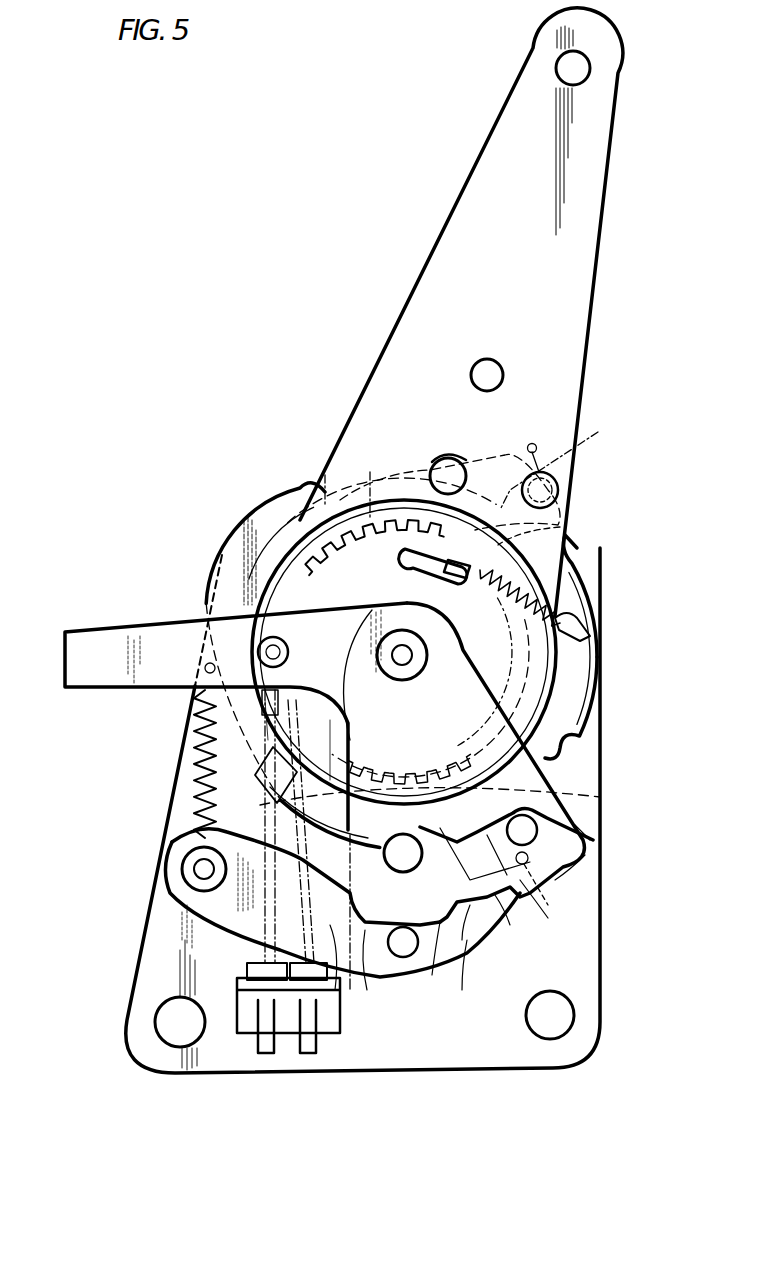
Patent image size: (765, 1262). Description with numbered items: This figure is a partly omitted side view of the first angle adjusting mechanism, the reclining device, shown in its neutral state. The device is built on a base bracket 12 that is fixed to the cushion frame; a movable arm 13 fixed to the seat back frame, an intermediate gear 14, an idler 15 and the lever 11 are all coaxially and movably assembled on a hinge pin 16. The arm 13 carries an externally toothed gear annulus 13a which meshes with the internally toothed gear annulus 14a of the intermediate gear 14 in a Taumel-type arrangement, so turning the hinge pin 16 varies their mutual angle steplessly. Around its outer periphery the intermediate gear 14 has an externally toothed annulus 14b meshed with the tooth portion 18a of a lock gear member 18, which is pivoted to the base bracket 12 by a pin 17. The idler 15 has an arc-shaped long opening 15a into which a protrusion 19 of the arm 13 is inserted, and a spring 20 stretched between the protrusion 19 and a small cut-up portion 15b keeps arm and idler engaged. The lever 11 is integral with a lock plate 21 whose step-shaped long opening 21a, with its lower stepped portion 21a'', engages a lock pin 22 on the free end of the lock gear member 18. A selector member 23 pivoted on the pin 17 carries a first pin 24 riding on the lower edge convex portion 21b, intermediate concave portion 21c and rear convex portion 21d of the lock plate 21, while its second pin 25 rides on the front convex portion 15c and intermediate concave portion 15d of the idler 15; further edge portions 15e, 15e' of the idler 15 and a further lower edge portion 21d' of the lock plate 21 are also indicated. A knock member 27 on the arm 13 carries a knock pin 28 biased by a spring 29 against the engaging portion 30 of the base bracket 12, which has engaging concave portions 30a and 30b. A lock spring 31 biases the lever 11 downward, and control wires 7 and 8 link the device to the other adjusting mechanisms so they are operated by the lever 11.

The control wire 7 is at (268, 1058).
The control wire 8 is at (306, 1058).
The lever 11 is at (100, 630).
The base bracket 12 is at (150, 966).
The movable arm 13 is at (597, 207).
The externally toothed gear annulus 13a is at (340, 550).
The intermediate gear 14 is at (575, 657).
The internally toothed gear annulus 14a is at (372, 520).
The externally toothed annulus 14b is at (458, 790).
The idler 15 is at (305, 545).
The arc-shaped long opening 15a is at (410, 563).
The small cut-up portion 15b is at (584, 628).
The front convex portion 15c is at (295, 751).
The intermediate concave portion 15d is at (600, 805).
The outer edge 15e is at (615, 629).
The notch 15e' is at (608, 717).
The hinge pin 16 is at (412, 663).
The pin 17 is at (182, 867).
The lock gear member 18 is at (262, 841).
The tooth portion 18a is at (405, 792).
The protrusion 19 is at (458, 578).
The spring 20 is at (511, 603).
The lock plate 21 is at (486, 698).
The step-shape long opening 21a is at (490, 949).
The lower stepped portion 21a'' is at (560, 907).
The lower edge convex portion 21b is at (359, 973).
The intermediate lower edge concave portion 21c is at (508, 930).
The rear side lower edge convex portion 21d is at (611, 878).
The lever portion 21d' is at (435, 967).
The lock pin 22 is at (387, 868).
The selector member 23 is at (465, 990).
The first pin 24 is at (405, 958).
The second pin 25 is at (588, 840).
The knock member 27 is at (519, 447).
The knock pin 28 is at (465, 480).
The spring 29 is at (562, 457).
The engaging portion 30 is at (345, 500).
The engaging concave portion 30a is at (440, 467).
The engaging concave portion 30b is at (560, 527).
The lock spring 31 is at (195, 739).